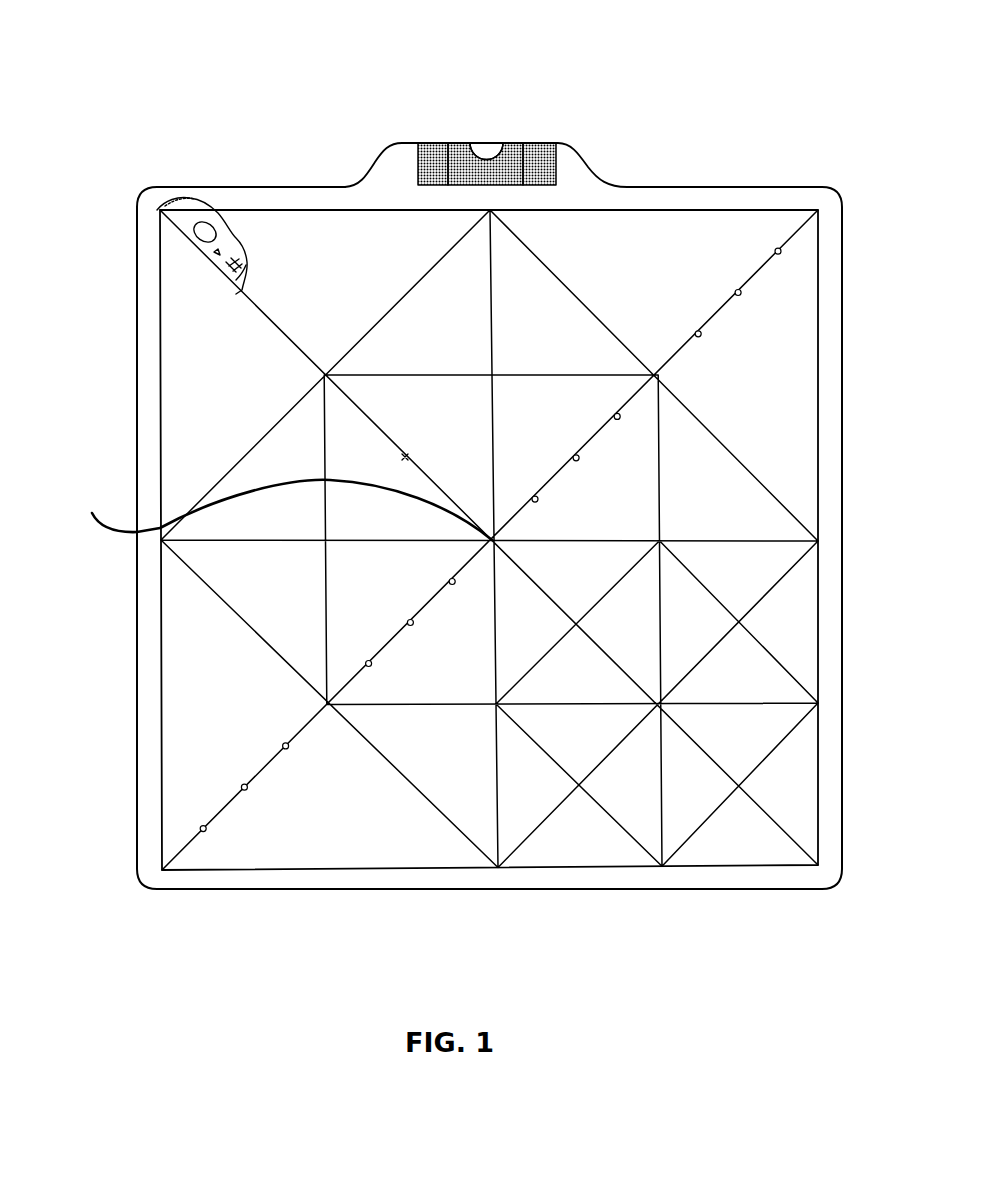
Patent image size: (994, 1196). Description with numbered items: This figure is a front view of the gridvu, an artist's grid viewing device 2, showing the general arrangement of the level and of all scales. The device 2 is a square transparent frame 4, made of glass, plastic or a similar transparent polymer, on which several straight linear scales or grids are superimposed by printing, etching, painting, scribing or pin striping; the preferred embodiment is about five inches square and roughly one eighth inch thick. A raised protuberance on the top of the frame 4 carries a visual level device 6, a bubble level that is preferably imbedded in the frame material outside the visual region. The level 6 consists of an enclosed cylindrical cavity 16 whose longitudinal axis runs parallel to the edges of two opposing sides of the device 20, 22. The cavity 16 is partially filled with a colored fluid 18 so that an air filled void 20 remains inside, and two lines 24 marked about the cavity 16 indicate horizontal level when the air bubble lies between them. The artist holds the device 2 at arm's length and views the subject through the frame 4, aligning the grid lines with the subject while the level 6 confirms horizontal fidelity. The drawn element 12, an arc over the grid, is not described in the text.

The artist's grid viewing device 2 is at (667, 157).
The transparent frame 4 is at (153, 187).
The visual level device 6 is at (553, 150).
The flexible cord 12 is at (282, 510).
The cavity 16 is at (433, 165).
The colored fluid 18 is at (517, 150).
The air filled void 20 is at (482, 145).
The side of the device 22 is at (755, 187).
The lines 24 is at (549, 164).